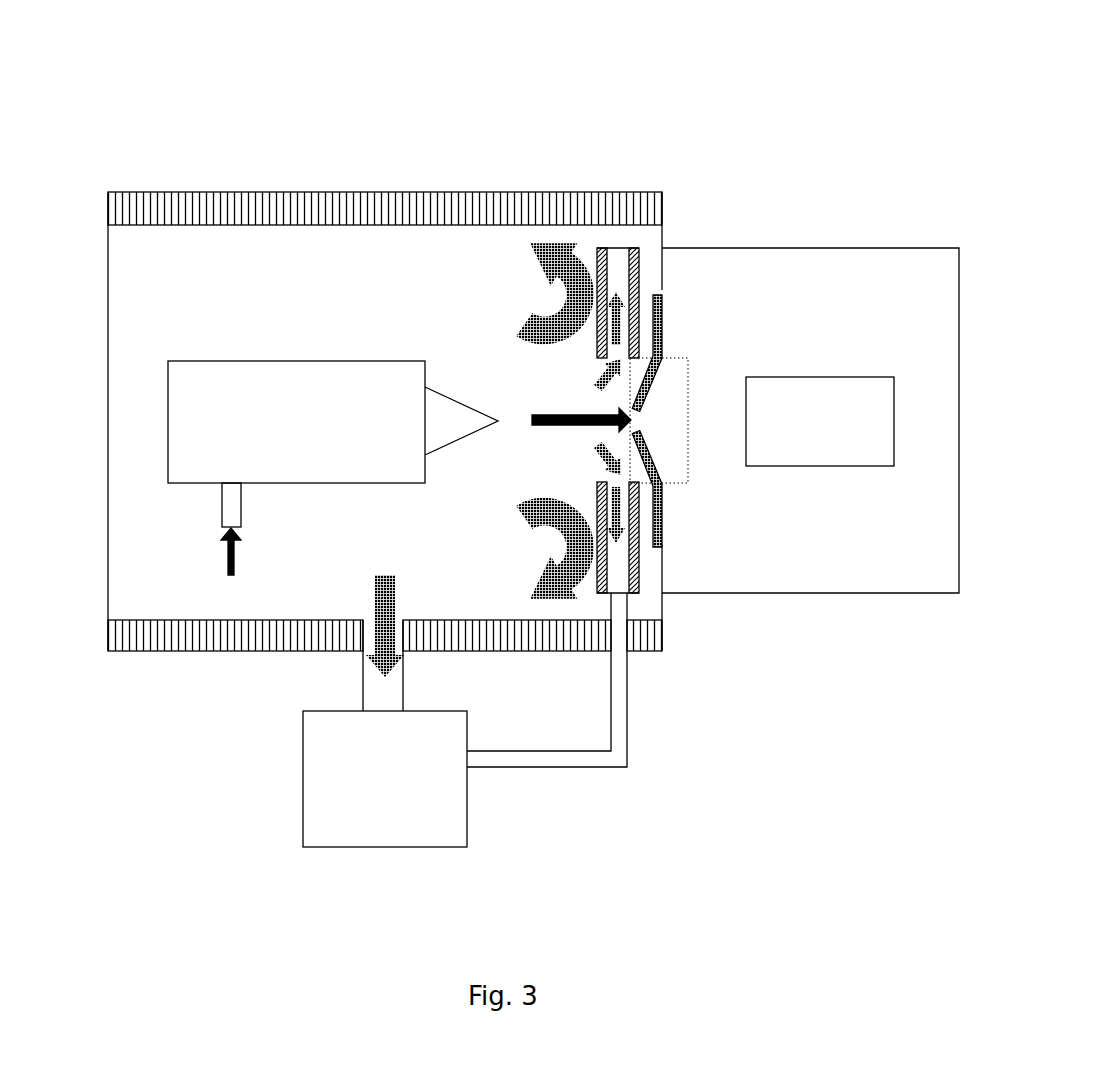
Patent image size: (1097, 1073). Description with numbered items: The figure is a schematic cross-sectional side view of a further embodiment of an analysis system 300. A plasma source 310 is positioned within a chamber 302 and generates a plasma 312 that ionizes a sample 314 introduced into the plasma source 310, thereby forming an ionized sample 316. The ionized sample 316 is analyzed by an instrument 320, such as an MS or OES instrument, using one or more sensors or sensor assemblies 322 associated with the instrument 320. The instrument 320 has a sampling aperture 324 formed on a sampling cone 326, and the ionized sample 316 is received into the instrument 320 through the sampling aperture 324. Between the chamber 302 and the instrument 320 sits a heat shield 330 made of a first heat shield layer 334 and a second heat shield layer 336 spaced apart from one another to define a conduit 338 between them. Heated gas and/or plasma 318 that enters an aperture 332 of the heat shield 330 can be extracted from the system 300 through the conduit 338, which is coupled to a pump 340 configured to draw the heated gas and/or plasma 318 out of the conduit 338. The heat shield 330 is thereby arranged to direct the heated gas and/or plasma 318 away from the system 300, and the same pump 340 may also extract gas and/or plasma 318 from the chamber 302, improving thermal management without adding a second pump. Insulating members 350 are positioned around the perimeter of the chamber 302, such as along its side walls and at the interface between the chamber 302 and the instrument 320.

The analysis system 300 is at (814, 88).
The chamber 302 is at (155, 332).
The plasma source 310 is at (296, 444).
The plasma 312 is at (468, 436).
The sample 314 is at (225, 556).
The ionized sample 316 is at (552, 440).
The heated gas and/or plasma 318 is at (553, 317).
The instrument 320 is at (810, 420).
The sensor assembly 322 is at (820, 421).
The sampling aperture 324 is at (648, 411).
The sampling cone 326 is at (655, 461).
The heat shield 330 is at (648, 260).
The aperture of the heat shield 332 is at (590, 402).
The first heat shield layer 334 is at (636, 284).
The second heat shield layer 336 is at (597, 253).
The conduit 338 is at (619, 563).
The pump 340 is at (465, 720).
The insulating member 350 is at (355, 195).